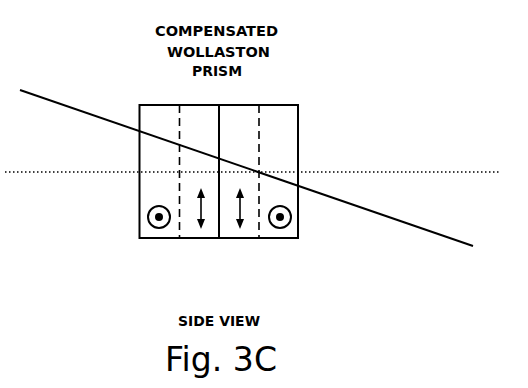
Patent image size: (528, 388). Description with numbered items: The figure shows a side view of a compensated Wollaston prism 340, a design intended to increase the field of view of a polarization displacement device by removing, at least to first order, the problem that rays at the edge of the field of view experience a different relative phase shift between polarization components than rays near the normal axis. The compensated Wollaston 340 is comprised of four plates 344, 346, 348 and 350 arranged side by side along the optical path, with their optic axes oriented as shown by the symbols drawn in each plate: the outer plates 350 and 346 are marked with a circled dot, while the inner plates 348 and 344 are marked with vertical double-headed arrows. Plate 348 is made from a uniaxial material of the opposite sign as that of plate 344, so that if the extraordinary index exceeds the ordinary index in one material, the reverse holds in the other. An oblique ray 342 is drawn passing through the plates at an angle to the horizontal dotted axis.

The compensated Wollaston prism 340 is at (102, 85).
The incident light ray 342 is at (32, 88).
The plate 344 is at (240, 233).
The plate 346 is at (282, 233).
The plate 348 is at (202, 233).
The plate 350 is at (160, 234).